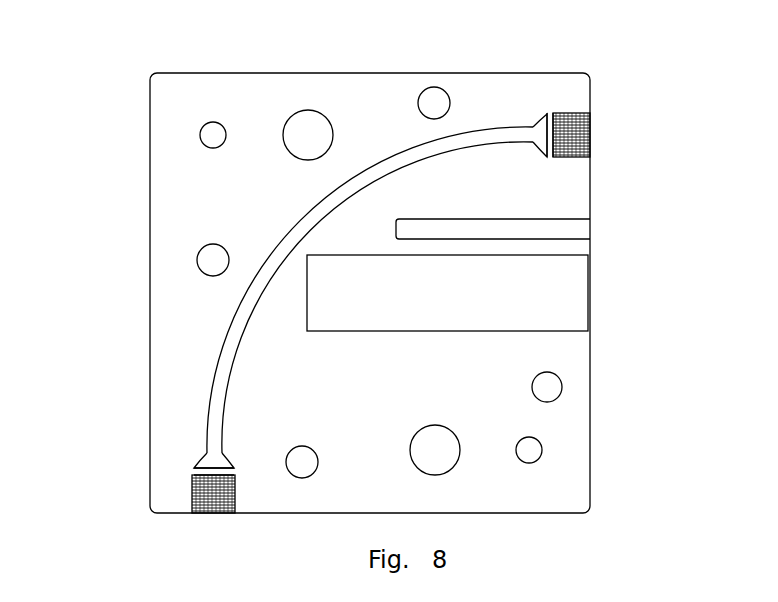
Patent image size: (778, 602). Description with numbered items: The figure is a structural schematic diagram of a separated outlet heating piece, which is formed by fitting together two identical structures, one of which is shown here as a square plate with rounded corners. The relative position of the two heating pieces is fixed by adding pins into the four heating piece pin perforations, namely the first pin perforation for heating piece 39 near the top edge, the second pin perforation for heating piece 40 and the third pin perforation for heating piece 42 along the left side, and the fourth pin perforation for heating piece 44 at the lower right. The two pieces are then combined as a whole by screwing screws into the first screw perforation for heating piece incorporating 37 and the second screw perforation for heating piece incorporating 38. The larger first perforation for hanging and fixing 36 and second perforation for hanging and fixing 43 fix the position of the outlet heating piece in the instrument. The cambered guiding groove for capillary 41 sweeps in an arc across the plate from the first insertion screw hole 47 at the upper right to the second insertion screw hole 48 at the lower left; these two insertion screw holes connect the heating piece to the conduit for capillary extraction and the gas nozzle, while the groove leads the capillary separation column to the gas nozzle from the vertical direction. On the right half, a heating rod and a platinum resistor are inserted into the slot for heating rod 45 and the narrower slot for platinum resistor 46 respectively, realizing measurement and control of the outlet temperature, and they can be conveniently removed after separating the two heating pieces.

The first perforation for hanging and fixing 36 is at (191, 98).
The first screw perforation for heating piece incorporating 37 is at (138, 132).
The second screw perforation for heating piece incorporating 38 is at (609, 470).
The first pin perforation for heating piece 39 is at (560, 76).
The second pin perforation for heating piece 40 is at (139, 233).
The cambered guiding groove for capillary 41 is at (291, 290).
The third pin perforation for heating piece 42 is at (184, 423).
The second perforation for hanging and fixing 43 is at (556, 484).
The fourth pin perforation for heating piece 44 is at (617, 407).
The slot for heating rod 45 is at (505, 299).
The slot for platinum resistor 46 is at (549, 196).
The first insertion screw hole 47 is at (618, 123).
The second insertion screw hole 48 is at (142, 483).